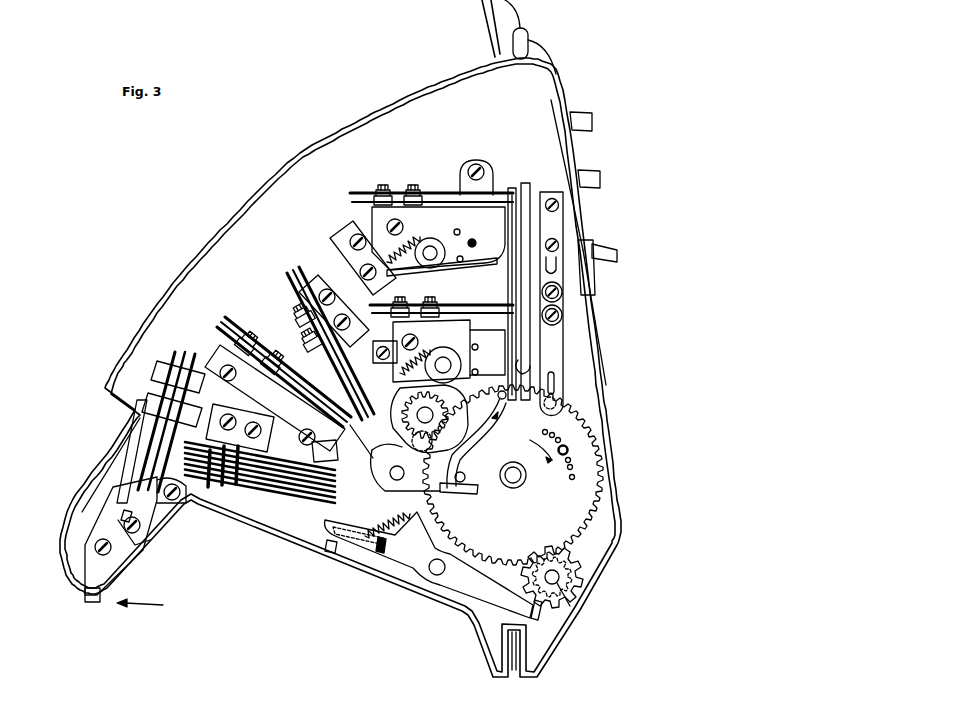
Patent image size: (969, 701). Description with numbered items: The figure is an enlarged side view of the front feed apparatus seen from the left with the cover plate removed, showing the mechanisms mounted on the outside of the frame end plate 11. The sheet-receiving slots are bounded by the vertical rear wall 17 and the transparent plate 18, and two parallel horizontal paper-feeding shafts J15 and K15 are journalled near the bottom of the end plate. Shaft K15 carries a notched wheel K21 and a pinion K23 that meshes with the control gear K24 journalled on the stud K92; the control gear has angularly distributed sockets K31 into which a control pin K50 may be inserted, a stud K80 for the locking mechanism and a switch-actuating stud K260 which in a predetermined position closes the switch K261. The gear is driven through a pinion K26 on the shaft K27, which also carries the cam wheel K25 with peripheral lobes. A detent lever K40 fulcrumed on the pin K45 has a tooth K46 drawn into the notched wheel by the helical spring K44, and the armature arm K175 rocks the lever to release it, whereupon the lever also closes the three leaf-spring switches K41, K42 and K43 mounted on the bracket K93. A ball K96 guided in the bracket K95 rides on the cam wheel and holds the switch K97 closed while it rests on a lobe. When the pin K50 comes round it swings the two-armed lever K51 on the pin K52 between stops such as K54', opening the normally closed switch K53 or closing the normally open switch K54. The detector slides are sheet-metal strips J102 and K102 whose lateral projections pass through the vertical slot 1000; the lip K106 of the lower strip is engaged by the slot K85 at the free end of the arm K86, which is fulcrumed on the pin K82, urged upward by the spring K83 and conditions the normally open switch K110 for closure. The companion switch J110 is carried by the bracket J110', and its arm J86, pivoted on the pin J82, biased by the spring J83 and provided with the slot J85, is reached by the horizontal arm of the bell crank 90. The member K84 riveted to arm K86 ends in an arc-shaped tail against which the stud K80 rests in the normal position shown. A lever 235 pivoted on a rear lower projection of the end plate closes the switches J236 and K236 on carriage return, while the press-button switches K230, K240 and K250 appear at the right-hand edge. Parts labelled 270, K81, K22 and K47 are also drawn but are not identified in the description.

The frame end plate 11 is at (311, 162).
The vertical rear wall 17 is at (497, 32).
The plate 18 is at (530, 40).
The strip 270 is at (583, 144).
The press button switch K250 is at (594, 120).
The press button switch K240 is at (601, 180).
The press button switch K230 is at (618, 256).
The strip of sheet metal J102 is at (517, 236).
The strip of sheet metal K102 is at (530, 353).
The vertical slot 1000 is at (517, 278).
The switch K110 is at (610, 314).
The slot K85 is at (528, 370).
The horizontally bent lip K106 is at (556, 383).
The switch K261 is at (558, 392).
The switch-actuating stud K260 is at (521, 408).
The arm tip K81 is at (495, 421).
The sheet metal member K84 is at (463, 438).
The stud K80 is at (463, 473).
The two-armed lever K51 is at (447, 491).
The ball K96 is at (403, 467).
The switch K97 is at (355, 446).
The pin K52 is at (397, 481).
The control gear K24 is at (598, 487).
The shaft J15 is at (482, 560).
The stud K92 is at (521, 480).
The control pin K50 is at (568, 449).
The sockets K31 is at (571, 467).
The pinion K22 is at (580, 570).
The pinion K23 is at (581, 580).
The notched wheel K21 is at (583, 597).
The shaft K15 is at (582, 613).
The tooth K46 is at (540, 614).
The shaft K27 is at (418, 425).
The cam wheel K25 is at (441, 392).
The pinion K26 is at (425, 448).
The helical spring K83 is at (392, 368).
The arm K86 is at (452, 347).
The pin K82 is at (443, 356).
The bell crank 90 is at (464, 278).
The switch J110 is at (447, 185).
The arm J86 is at (455, 230).
The bracket J110' is at (418, 238).
The pin J82 is at (439, 247).
The slot J85 is at (445, 355).
The helical spring J83 is at (442, 273).
The bracket K95 is at (337, 240).
The switch K53 is at (345, 390).
The switch K54 is at (278, 384).
The stop K54' is at (311, 453).
The bracket K93 is at (240, 413).
The electrical switch K41 is at (318, 477).
The electrical switch K42 is at (325, 489).
The electrical switch K43 is at (327, 505).
The helical spring K44 is at (329, 554).
The detent lever K40 is at (467, 590).
The pin K45 is at (433, 577).
The arm K175 is at (378, 547).
The pawl K47 is at (380, 552).
The switch K236 is at (153, 513).
The switch J236 is at (128, 478).
The lever 235 is at (90, 603).